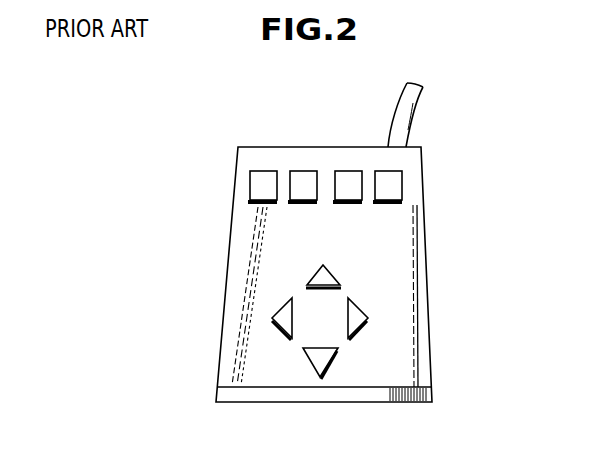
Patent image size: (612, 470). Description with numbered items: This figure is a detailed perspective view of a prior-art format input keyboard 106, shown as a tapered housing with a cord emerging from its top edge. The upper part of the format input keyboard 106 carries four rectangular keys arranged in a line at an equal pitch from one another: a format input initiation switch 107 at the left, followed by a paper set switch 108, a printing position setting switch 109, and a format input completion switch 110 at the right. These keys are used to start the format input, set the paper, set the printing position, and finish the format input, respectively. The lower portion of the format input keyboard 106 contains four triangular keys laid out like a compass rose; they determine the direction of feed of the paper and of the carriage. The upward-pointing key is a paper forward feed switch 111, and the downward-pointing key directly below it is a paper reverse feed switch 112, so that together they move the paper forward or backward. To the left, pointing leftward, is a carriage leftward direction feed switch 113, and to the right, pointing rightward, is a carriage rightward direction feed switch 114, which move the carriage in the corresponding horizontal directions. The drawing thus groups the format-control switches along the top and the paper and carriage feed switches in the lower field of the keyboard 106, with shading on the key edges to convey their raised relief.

The format input keyboard 106 is at (393, 386).
The format input initiation switch 107 is at (255, 189).
The paper set switch 108 is at (305, 172).
The printing position setting switch 109 is at (349, 172).
The format input completion switch 110 is at (397, 187).
The paper forward feed switch 111 is at (329, 272).
The paper reverse feed switch 112 is at (320, 364).
The carriage leftward direction feed switch 113 is at (270, 316).
The carriage rightward direction feed switch 114 is at (366, 316).